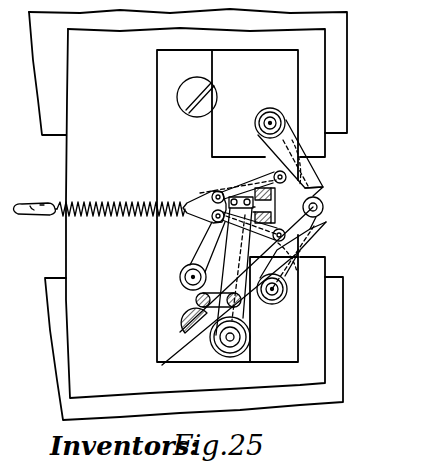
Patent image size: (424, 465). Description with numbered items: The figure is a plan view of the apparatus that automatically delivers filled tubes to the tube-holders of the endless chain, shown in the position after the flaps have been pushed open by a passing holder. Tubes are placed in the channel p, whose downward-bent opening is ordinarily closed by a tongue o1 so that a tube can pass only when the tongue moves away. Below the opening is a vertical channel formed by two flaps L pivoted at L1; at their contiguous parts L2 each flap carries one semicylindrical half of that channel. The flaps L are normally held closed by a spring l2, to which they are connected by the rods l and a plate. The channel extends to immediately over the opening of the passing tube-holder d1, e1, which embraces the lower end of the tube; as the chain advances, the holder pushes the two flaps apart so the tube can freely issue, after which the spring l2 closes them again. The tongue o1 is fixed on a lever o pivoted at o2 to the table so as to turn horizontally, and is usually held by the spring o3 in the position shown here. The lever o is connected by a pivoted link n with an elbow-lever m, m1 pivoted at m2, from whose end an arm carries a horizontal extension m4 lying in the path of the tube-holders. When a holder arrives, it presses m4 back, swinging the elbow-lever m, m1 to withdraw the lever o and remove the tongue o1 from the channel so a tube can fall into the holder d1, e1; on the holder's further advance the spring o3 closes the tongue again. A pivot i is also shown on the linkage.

The spring l2 is at (85, 202).
The channel p is at (239, 190).
The rod l is at (272, 179).
The link i is at (259, 237).
The horizontal extension m4 is at (272, 231).
The flap L is at (309, 178).
The flap pivot L1 is at (270, 108).
The contiguous part of flap L2 is at (321, 189).
The tube-holder d1 is at (324, 207).
The tongue o1 is at (302, 205).
The tube-holder e1 is at (303, 209).
The elbow-lever m is at (200, 256).
The elbow-lever pivot m2 is at (180, 276).
The elbow-lever m1 is at (195, 298).
The pivoted link n is at (239, 278).
The lever o is at (234, 271).
The lever pivot o2 is at (250, 340).
The spring o3 is at (162, 365).